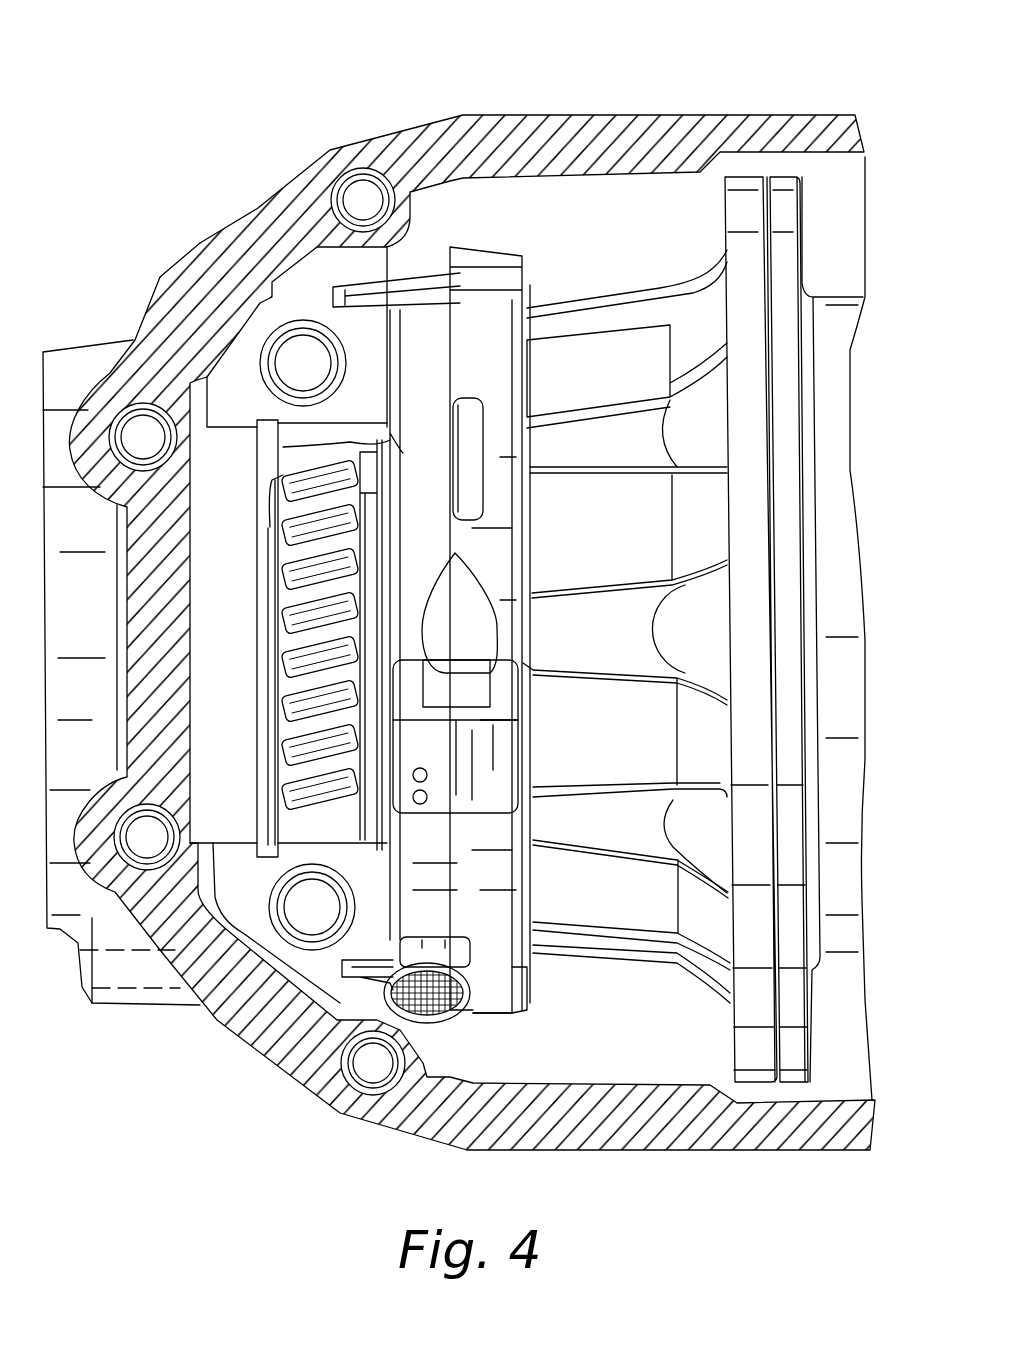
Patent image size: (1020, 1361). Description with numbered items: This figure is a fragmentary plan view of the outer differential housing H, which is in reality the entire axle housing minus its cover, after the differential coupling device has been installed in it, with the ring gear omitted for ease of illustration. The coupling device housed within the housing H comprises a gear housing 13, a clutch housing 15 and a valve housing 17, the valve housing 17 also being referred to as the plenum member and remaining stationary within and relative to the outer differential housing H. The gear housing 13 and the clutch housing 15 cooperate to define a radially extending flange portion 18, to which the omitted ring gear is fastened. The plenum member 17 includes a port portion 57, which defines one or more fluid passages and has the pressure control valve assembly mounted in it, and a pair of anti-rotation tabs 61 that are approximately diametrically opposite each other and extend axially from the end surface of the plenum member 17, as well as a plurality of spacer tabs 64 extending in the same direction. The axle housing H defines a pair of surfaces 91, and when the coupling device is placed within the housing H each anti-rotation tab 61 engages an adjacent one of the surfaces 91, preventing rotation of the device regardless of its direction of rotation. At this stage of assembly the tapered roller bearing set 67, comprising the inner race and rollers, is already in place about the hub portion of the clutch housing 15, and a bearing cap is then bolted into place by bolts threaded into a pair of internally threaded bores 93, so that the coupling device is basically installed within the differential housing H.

The outer differential housing H is at (578, 114).
The gear housing 13 is at (833, 317).
The clutch housing 15 is at (613, 357).
The valve housing 17 is at (503, 947).
The flange portion 18 is at (738, 210).
The port portion 57 is at (453, 752).
The anti-rotation tabs 61 is at (360, 303).
The spacer tabs 64 is at (283, 447).
The tapered roller bearing set 67 is at (272, 631).
The surfaces 91 is at (320, 283).
The internally threaded bores 93 is at (303, 363).